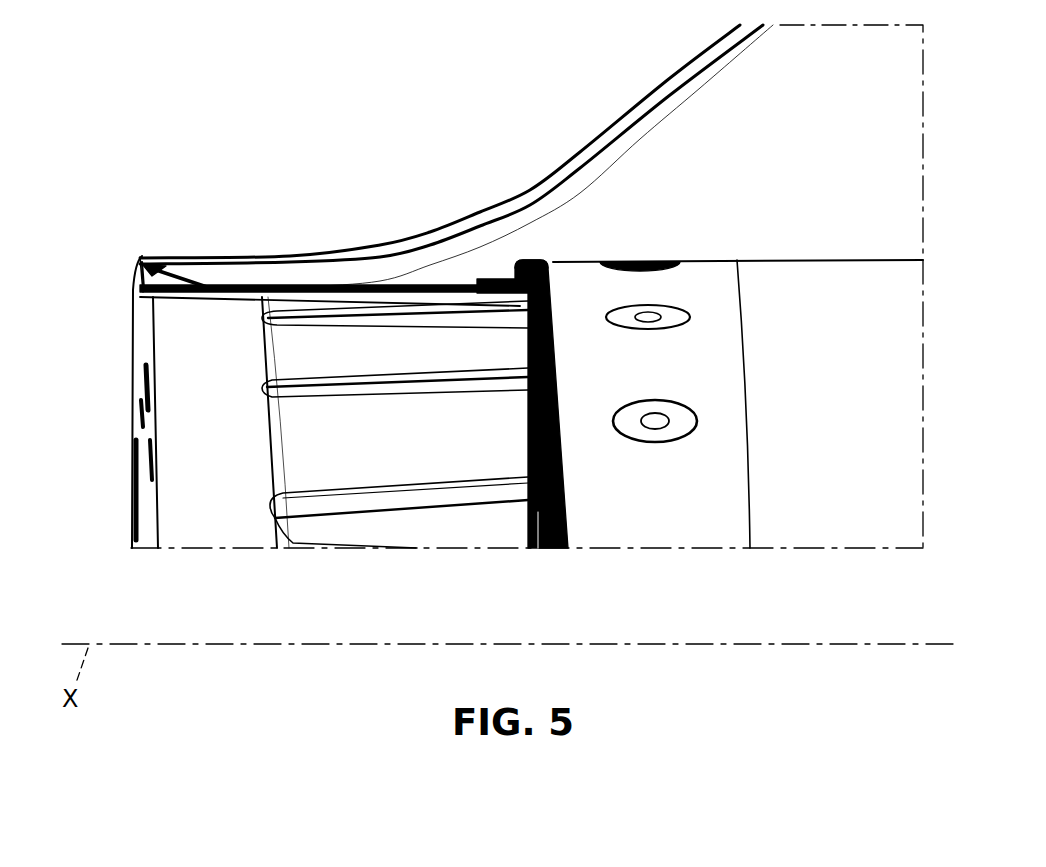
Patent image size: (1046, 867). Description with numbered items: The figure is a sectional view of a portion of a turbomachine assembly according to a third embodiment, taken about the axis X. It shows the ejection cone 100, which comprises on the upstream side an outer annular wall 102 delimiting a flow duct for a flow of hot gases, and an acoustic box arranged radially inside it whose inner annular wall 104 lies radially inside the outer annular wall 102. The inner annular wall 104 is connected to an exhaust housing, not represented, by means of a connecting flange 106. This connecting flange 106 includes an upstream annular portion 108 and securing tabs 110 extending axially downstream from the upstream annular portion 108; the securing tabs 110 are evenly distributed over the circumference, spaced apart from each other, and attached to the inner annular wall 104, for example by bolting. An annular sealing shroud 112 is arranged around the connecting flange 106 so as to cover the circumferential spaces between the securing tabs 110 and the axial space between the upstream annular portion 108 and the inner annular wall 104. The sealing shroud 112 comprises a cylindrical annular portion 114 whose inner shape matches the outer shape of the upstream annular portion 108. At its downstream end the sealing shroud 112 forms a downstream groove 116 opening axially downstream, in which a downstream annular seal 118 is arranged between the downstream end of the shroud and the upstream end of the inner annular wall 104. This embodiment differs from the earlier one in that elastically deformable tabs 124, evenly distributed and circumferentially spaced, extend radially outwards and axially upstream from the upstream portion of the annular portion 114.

The ejection cone 100 is at (286, 145).
The outer annular wall 102 is at (610, 165).
The inner annular wall 104 is at (805, 500).
The connecting flange 106 is at (110, 523).
The upstream annular portion 108 is at (212, 502).
The securing tabs 110 is at (370, 450).
The annular sealing shroud 112 is at (116, 278).
The annular portion 114 is at (288, 287).
The downstream groove 116 is at (518, 242).
The downstream annular seal 118 is at (498, 280).
The elastically deformable tabs 124 is at (180, 268).